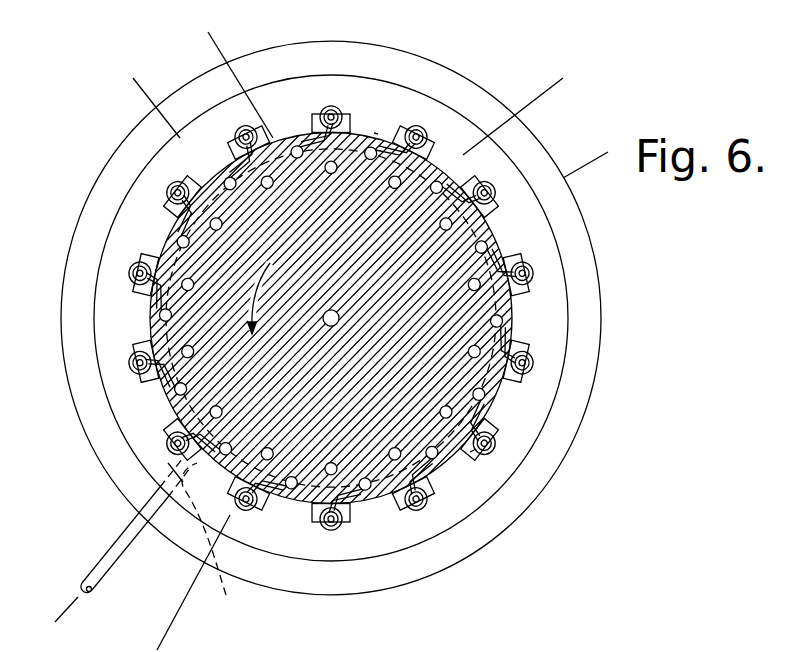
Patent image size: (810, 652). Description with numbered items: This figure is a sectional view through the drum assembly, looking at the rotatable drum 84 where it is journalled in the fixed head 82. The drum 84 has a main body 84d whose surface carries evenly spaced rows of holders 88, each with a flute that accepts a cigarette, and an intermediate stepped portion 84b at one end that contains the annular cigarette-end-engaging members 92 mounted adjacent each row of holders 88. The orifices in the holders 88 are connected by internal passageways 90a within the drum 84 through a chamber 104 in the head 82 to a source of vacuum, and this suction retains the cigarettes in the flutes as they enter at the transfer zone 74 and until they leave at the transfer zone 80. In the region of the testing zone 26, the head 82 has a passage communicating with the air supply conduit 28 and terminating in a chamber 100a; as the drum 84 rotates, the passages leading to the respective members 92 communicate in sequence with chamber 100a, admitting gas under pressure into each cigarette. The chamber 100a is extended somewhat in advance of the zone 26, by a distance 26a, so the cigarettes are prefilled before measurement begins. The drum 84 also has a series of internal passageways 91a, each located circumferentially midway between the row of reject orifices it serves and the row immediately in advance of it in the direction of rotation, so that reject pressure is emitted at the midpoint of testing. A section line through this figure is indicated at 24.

The rotary disk 24 is at (147, 323).
The testing zone 26 is at (68, 612).
The distance in advance of the testing zone 26a is at (197, 492).
The air supply conduit 28 is at (117, 565).
The transfer zone 74 is at (214, 42).
The transfer zone 80 is at (597, 155).
The fixed head 82 is at (452, 84).
The rotatable drum 84 is at (286, 124).
The intermediate stepped portion 84b is at (542, 432).
The main body 84d is at (374, 133).
The holders 88 is at (472, 455).
The internal passageways 90a is at (238, 142).
The internal passageways 91a is at (173, 238).
The cigarette-end-engaging members 92 is at (131, 265).
The chamber 100a is at (232, 543).
The chamber 104 is at (309, 133).